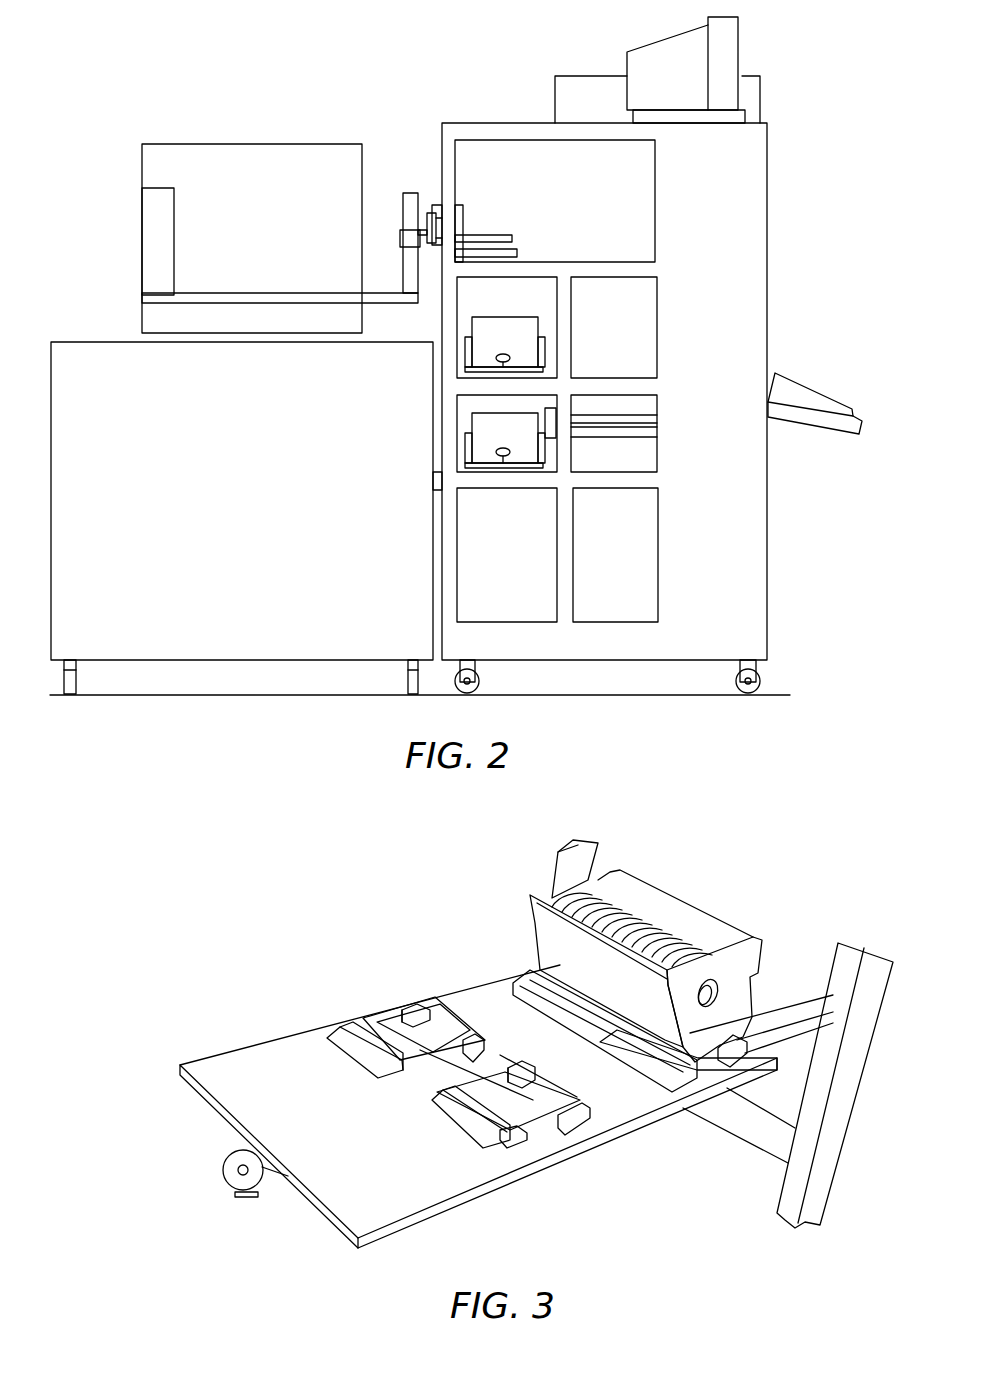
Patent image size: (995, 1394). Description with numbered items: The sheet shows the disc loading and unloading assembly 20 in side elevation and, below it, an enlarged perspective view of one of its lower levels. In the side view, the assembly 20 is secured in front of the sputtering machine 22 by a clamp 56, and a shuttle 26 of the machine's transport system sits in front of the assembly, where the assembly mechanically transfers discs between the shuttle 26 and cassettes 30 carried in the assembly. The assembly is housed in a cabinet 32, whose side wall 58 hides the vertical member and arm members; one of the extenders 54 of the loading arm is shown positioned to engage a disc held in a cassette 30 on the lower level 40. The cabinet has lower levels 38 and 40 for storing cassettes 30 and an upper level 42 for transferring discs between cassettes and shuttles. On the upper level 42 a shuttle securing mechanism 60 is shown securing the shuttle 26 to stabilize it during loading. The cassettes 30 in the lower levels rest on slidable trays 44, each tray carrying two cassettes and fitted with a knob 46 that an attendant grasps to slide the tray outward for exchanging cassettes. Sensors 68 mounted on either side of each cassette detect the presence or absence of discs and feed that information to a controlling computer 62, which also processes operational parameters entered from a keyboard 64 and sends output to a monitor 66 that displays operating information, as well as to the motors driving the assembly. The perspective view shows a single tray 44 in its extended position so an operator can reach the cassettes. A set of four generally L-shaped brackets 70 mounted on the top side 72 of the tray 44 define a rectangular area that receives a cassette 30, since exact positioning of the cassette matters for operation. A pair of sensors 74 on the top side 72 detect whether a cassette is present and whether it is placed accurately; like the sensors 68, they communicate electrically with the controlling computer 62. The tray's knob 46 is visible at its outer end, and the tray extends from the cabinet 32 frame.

In FIG. 2, the disc loading and unloading assembly 20 is at (508, 104).
In FIG. 2, the sputtering machine 22 is at (236, 138).
In FIG. 2, the shuttle 26 is at (410, 275).
In FIG. 2, the cassette 30 is at (505, 390).
In FIG. 3, the cassette 30 is at (627, 990).
In FIG. 2, the cabinet 32 is at (632, 408).
In FIG. 3, the cabinet 32 is at (767, 1137).
In FIG. 2, the lower level 38 is at (663, 335).
In FIG. 2, the lower level 40 is at (665, 437).
In FIG. 2, the upper level 42 is at (670, 200).
In FIG. 2, the slidable tray 44 is at (466, 371).
In FIG. 3, the slidable tray 44 is at (350, 1205).
In FIG. 2, the knob 46 is at (508, 357).
In FIG. 3, the knob 46 is at (233, 1163).
In FIG. 2, the extender 54 is at (614, 472).
In FIG. 2, the clamp 56 is at (436, 494).
In FIG. 2, the side wall 58 is at (730, 253).
In FIG. 2, the shuttle securing mechanism 60 is at (470, 214).
In FIG. 2, the controlling computer 62 is at (597, 95).
In FIG. 2, the keyboard 64 is at (805, 400).
In FIG. 2, the monitor 66 is at (676, 50).
In FIG. 2, the sensor 68 is at (470, 347).
In FIG. 3, the L-shaped bracket 70 is at (575, 1205).
In FIG. 3, the top side 72 is at (327, 1105).
In FIG. 3, the sensor 74 is at (437, 1118).